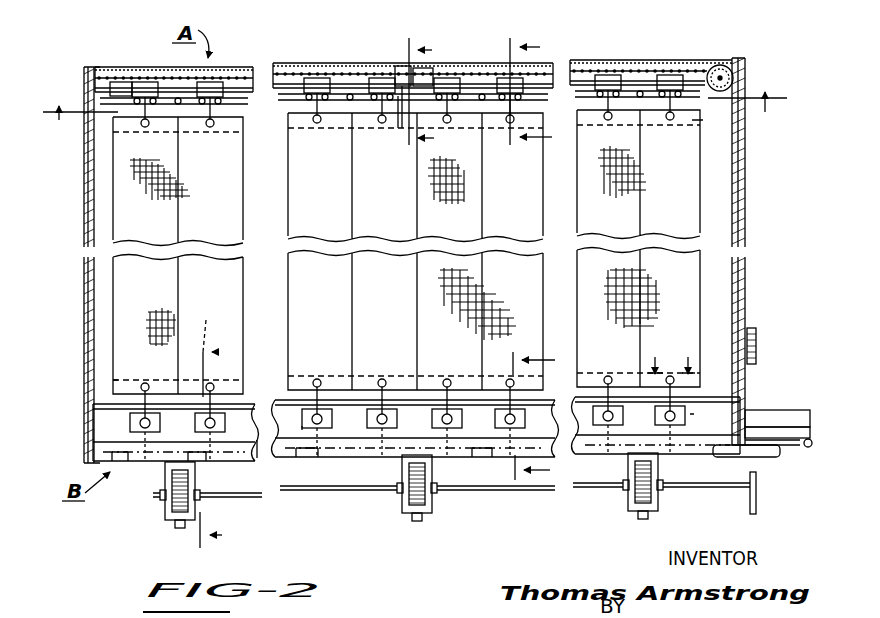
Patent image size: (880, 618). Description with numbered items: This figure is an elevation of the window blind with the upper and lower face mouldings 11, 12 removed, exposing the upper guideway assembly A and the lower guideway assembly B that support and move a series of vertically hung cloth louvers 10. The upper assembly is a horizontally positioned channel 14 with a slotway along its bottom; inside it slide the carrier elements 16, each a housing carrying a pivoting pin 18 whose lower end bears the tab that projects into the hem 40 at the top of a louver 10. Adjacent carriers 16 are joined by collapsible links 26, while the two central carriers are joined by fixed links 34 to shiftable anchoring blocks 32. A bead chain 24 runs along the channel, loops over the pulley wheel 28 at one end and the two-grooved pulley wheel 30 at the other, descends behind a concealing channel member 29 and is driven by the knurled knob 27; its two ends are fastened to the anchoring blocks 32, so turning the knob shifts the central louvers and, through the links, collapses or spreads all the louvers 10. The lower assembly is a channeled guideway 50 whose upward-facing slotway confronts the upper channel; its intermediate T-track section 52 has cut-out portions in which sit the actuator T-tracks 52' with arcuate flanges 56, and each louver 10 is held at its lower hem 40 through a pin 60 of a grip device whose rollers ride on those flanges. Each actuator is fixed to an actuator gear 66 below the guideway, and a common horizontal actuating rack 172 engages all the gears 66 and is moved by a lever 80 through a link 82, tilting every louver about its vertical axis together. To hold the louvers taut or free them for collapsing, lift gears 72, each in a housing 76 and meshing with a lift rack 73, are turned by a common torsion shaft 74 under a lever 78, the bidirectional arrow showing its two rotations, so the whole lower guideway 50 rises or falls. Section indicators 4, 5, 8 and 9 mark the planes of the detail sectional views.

The section line 4- 4 is at (542, 418).
The section line 5- 5 is at (538, 92).
The section line 8- 8 is at (429, 95).
The section line 9- 9 is at (218, 435).
The louver 10 is at (293, 163).
The face moulding 11 is at (676, 356).
The face moulding 12 is at (415, 120).
The channel 14 is at (322, 66).
The carrier element 16 is at (145, 82).
The pivoting pin 18 is at (213, 108).
The bead chain 24 is at (238, 72).
The collapsible link 26 is at (168, 102).
The knurled knob 27 is at (756, 346).
The pulley wheel 28 is at (90, 86).
The channel member 29 is at (745, 218).
The pulley wheel 30 is at (718, 65).
The shiftable anchoring block 32 is at (404, 66).
The fixed link 34 is at (398, 110).
The hem 40 is at (78, 363).
The lower channeled guideway 50 is at (110, 405).
The intermediate section 52 is at (271, 415).
The actuator T-track 52' is at (512, 444).
The arcuate flanges 56 is at (368, 414).
The pin 60 is at (604, 390).
The actuator gear 66 is at (148, 460).
The actuating rack 172 is at (246, 455).
The lift gear 72 is at (168, 508).
The lift rack 73 is at (182, 532).
The torsion shaft 74 is at (255, 498).
The housing 76 is at (436, 496).
The lever 78 is at (778, 504).
The lever 80 is at (795, 448).
The link 82 is at (740, 458).